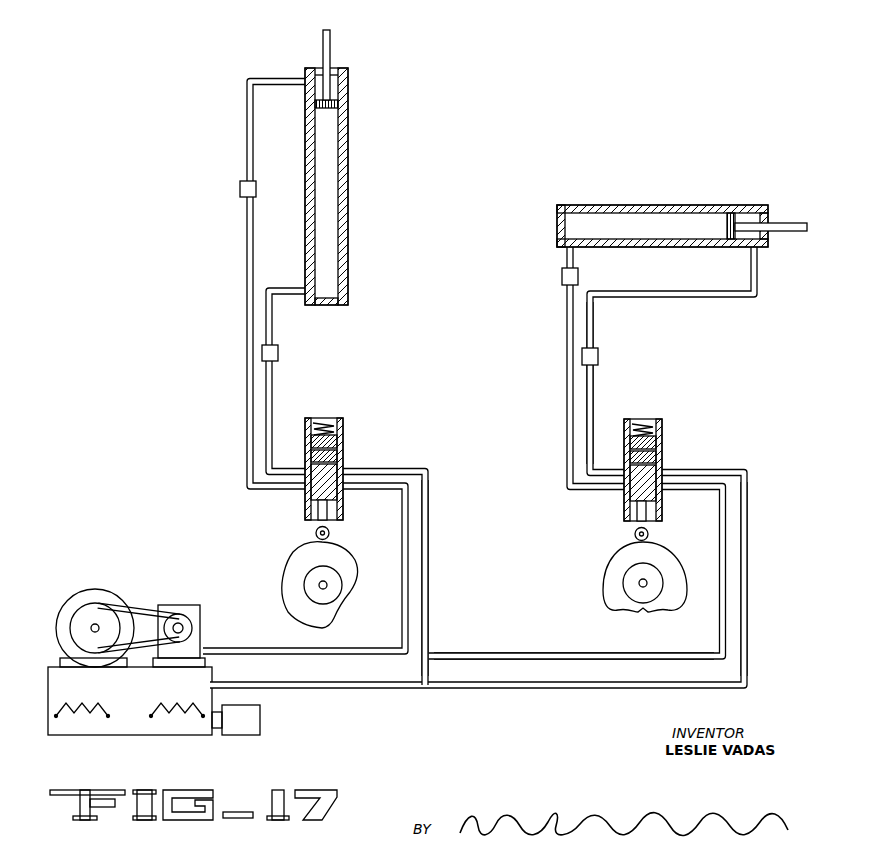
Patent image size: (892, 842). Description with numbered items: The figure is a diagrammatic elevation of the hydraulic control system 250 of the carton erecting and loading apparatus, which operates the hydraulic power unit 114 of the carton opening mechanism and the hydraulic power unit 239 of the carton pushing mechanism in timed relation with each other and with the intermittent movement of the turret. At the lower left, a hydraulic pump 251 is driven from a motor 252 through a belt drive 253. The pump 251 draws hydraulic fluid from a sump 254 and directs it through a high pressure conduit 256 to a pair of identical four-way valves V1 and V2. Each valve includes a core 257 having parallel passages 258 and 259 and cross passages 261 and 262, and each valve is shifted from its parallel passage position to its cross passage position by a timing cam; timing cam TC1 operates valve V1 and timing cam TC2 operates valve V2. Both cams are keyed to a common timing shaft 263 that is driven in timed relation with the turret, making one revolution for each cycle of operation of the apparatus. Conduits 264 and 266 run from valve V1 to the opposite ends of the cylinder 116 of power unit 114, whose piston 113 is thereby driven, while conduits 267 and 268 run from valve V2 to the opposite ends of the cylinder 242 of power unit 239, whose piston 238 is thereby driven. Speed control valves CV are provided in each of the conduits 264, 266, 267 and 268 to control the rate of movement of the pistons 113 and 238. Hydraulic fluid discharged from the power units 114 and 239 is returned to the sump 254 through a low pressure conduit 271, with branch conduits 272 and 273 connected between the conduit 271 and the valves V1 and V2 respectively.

The piston 238 is at (331, 48).
The hydraulic power unit 239 is at (347, 120).
The cylinder 242 is at (344, 158).
The hydraulic control system 250 is at (224, 158).
The speed control valve CV is at (240, 188).
The conduit 268 is at (246, 347).
The conduit 267 is at (273, 378).
The conduit 266 is at (566, 352).
The conduit 264 is at (594, 377).
The four-way valve V2 is at (340, 418).
The four-way valve V1 is at (660, 420).
The core 257 is at (336, 430).
The parallel passage 258 is at (338, 446).
The parallel passage 259 is at (340, 460).
The cross passage 262 is at (316, 505).
The cross passage 261 is at (348, 503).
The timing cam TC2 is at (292, 563).
The timing cam TC1 is at (610, 567).
The timing shaft 263 is at (328, 588).
The motor 252 is at (73, 600).
The belt drive 253 is at (125, 605).
The hydraulic pump 251 is at (193, 604).
The sump 254 is at (160, 694).
The branch conduit 273 is at (430, 592).
The high pressure conduit 256 is at (475, 654).
The low pressure conduit 271 is at (465, 692).
The branch conduit 272 is at (750, 572).
The hydraulic power unit 114 is at (634, 170).
The cylinder 116 is at (690, 205).
The piston 113 is at (790, 223).